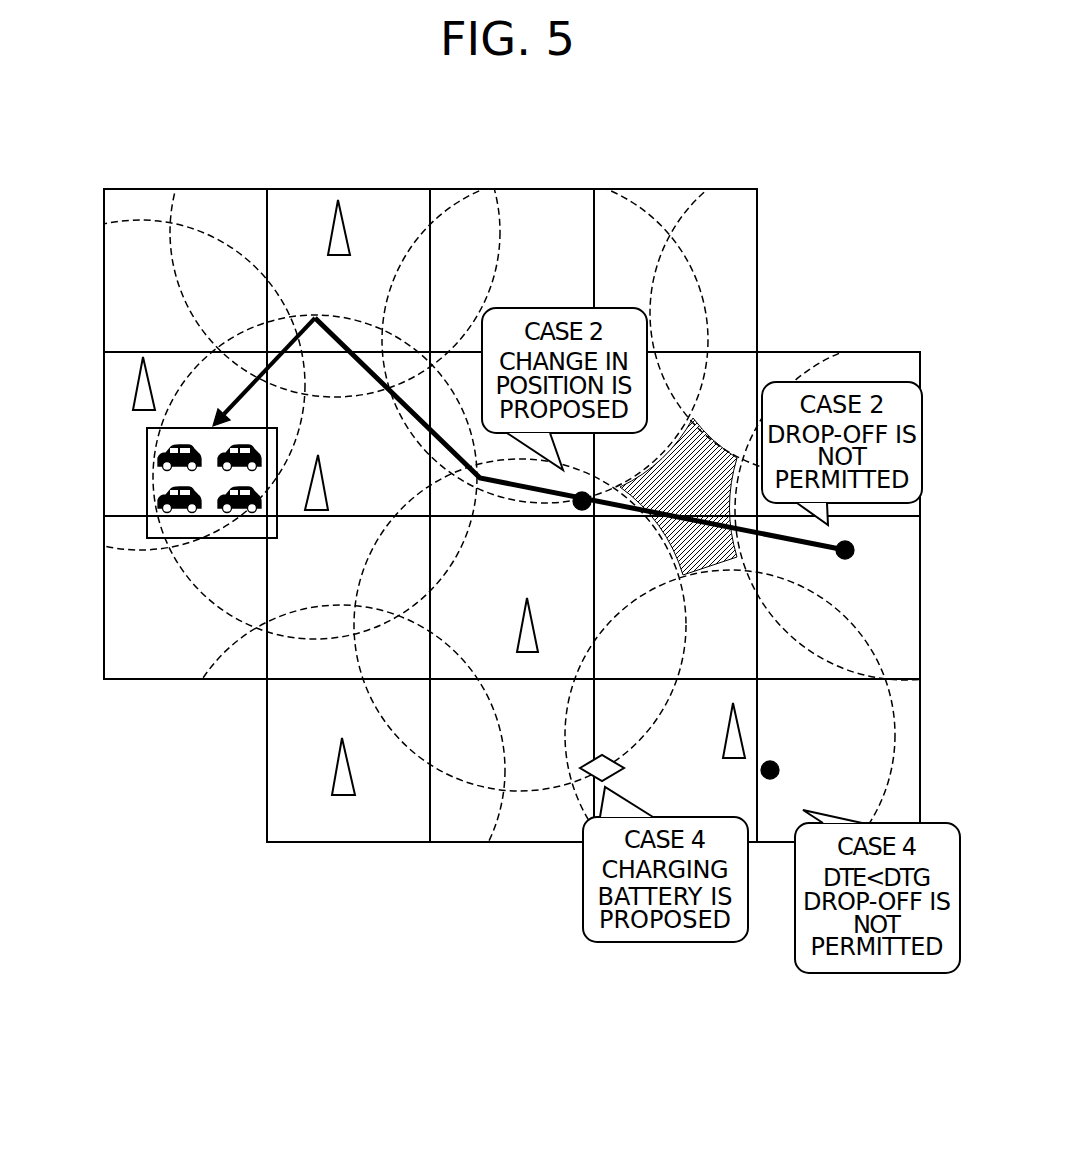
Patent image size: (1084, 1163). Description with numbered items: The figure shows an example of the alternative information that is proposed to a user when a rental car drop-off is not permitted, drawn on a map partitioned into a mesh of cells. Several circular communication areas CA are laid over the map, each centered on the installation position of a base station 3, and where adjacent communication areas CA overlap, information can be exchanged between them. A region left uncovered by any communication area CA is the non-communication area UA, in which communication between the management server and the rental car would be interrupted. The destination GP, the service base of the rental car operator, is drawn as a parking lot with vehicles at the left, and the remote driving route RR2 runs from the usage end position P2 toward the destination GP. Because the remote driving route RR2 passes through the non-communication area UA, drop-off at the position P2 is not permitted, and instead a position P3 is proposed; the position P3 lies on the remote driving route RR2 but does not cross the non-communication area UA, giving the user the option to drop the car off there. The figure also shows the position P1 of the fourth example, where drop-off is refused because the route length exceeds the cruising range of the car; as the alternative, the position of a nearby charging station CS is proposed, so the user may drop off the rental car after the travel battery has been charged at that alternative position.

The base station 3 is at (329, 226).
The remote driving route RR2 is at (343, 338).
The communication area CA is at (643, 210).
The non-communication area UA is at (713, 427).
The destination GP is at (147, 497).
The charging station CS is at (590, 777).
The position P1 is at (781, 787).
The position P2 is at (866, 556).
The position P3 is at (568, 490).